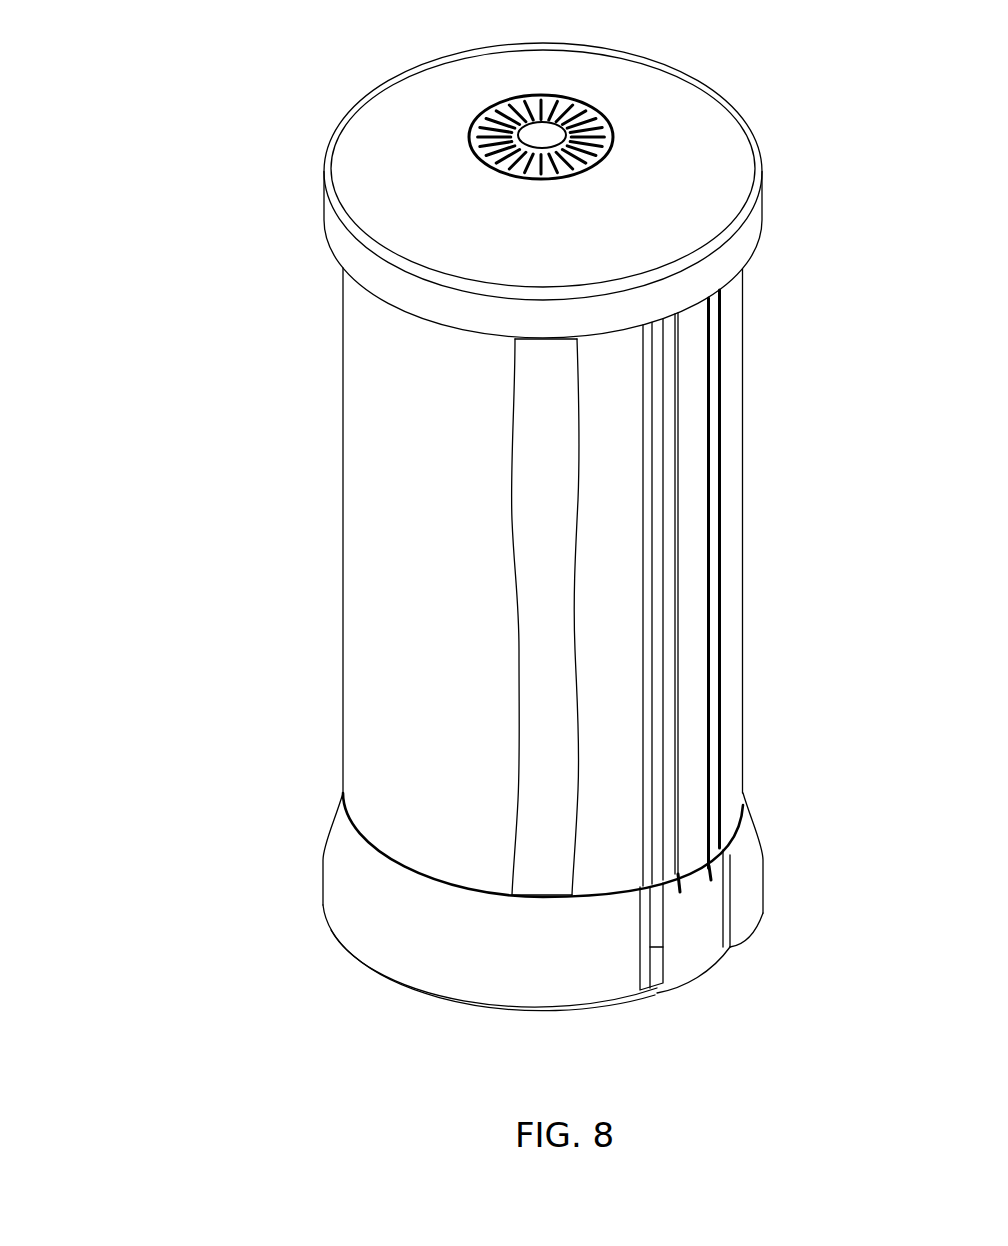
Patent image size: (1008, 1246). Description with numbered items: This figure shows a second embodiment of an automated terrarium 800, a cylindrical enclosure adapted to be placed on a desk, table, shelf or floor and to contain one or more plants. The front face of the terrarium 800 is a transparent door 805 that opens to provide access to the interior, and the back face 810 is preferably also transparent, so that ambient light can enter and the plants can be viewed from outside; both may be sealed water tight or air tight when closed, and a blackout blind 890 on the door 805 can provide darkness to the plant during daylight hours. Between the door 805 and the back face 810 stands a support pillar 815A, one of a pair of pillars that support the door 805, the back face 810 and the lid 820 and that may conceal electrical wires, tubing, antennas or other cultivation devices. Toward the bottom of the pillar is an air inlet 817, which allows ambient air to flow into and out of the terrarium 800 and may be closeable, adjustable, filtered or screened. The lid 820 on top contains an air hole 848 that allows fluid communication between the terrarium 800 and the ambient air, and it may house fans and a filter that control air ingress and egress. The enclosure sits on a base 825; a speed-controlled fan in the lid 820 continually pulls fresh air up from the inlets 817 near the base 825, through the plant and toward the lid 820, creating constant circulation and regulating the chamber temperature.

The terrarium 800 is at (165, 222).
The transparent door 805 is at (364, 610).
The back face 810 is at (732, 420).
The support pillar 815A is at (690, 550).
The air inlet 817 is at (720, 875).
The lid 820 is at (725, 170).
The base 825 is at (372, 882).
The air hole 848 is at (590, 108).
The blackout blind 890 is at (568, 721).